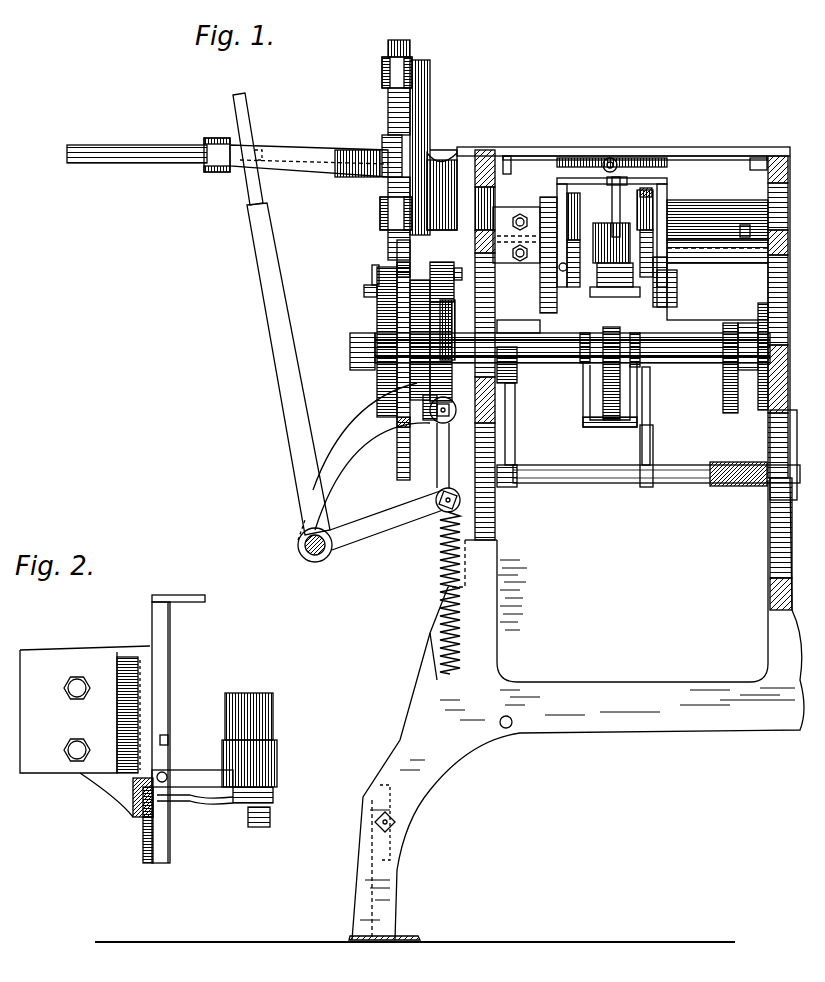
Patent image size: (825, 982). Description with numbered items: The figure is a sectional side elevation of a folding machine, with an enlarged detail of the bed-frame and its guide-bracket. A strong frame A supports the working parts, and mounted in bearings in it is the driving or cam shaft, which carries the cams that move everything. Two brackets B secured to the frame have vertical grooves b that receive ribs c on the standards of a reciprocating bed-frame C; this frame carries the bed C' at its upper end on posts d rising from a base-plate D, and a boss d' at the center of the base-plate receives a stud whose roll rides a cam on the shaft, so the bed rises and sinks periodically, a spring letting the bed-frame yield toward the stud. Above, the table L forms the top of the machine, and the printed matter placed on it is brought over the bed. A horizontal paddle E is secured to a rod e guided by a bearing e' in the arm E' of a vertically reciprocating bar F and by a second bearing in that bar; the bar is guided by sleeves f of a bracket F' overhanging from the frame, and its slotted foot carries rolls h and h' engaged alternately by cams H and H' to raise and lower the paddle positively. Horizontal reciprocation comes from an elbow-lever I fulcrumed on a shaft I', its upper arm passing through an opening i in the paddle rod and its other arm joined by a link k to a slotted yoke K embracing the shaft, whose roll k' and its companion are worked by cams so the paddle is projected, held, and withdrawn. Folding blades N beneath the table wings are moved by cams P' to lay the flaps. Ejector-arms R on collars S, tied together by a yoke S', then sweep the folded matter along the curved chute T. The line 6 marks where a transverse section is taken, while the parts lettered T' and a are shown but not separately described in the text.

In FIG. 1, the frame A is at (493, 632).
In FIG. 1, the table L is at (703, 150).
In FIG. 1, the paddle rod or shank e is at (137, 144).
In FIG. 1, the bearing e' is at (207, 142).
In FIG. 1, the vertical opening i is at (262, 147).
In FIG. 1, the paddle E is at (509, 149).
In FIG. 1, the arm E' is at (309, 170).
In FIG. 1, the vertically reciprocating bar F is at (374, 351).
In FIG. 1, the bracket F' is at (432, 160).
In FIG. 1, the sleeves f is at (385, 65).
In FIG. 1, the upper anti-friction roll h is at (356, 266).
In FIG. 1, the lower anti-friction roll h' is at (413, 435).
In FIG. 1, the cam H is at (365, 342).
In FIG. 1, the cam H' is at (416, 256).
In FIG. 1, the slotted yoke K is at (440, 312).
In FIG. 1, the link k is at (436, 454).
In FIG. 1, the anti-friction roll k' is at (412, 419).
In FIG. 1, the elbow-lever I is at (282, 327).
In FIG. 1, the shaft I' is at (386, 520).
In FIG. 1, the folding knife or blade N is at (616, 158).
In FIG. 1, the bed-frame C is at (717, 231).
In FIG. 1, the bed C' is at (635, 145).
In FIG. 2, the bed C' is at (178, 607).
In FIG. 1, the curved chute T is at (606, 299).
In FIG. 1, the bracket T' is at (644, 225).
In FIG. 1, the ejector-arms R is at (712, 200).
In FIG. 1, the vertical grooves b is at (551, 255).
In FIG. 2, the vertical grooves b is at (145, 686).
In FIG. 1, the ribs or tongues c is at (619, 248).
In FIG. 2, the ribs or tongues c is at (148, 855).
In FIG. 1, the posts or standards d is at (570, 207).
In FIG. 2, the posts or standards d is at (149, 745).
In FIG. 1, the boss d' is at (615, 252).
In FIG. 2, the boss d' is at (238, 740).
In FIG. 1, the brackets B is at (548, 275).
In FIG. 2, the brackets B is at (122, 780).
In FIG. 1, the base-plate D is at (740, 232).
In FIG. 2, the base-plate D is at (188, 776).
In FIG. 1, the collars S is at (604, 360).
In FIG. 1, the yoke S' is at (610, 406).
In FIG. 1, the cam P' is at (733, 368).
In FIG. 1, the section line 6 is at (557, 150).
In FIG. 2, the slot a is at (168, 740).
In FIG. 1, the element spring is at (450, 593).
In FIG. 1, the driving- shaft is at (560, 351).